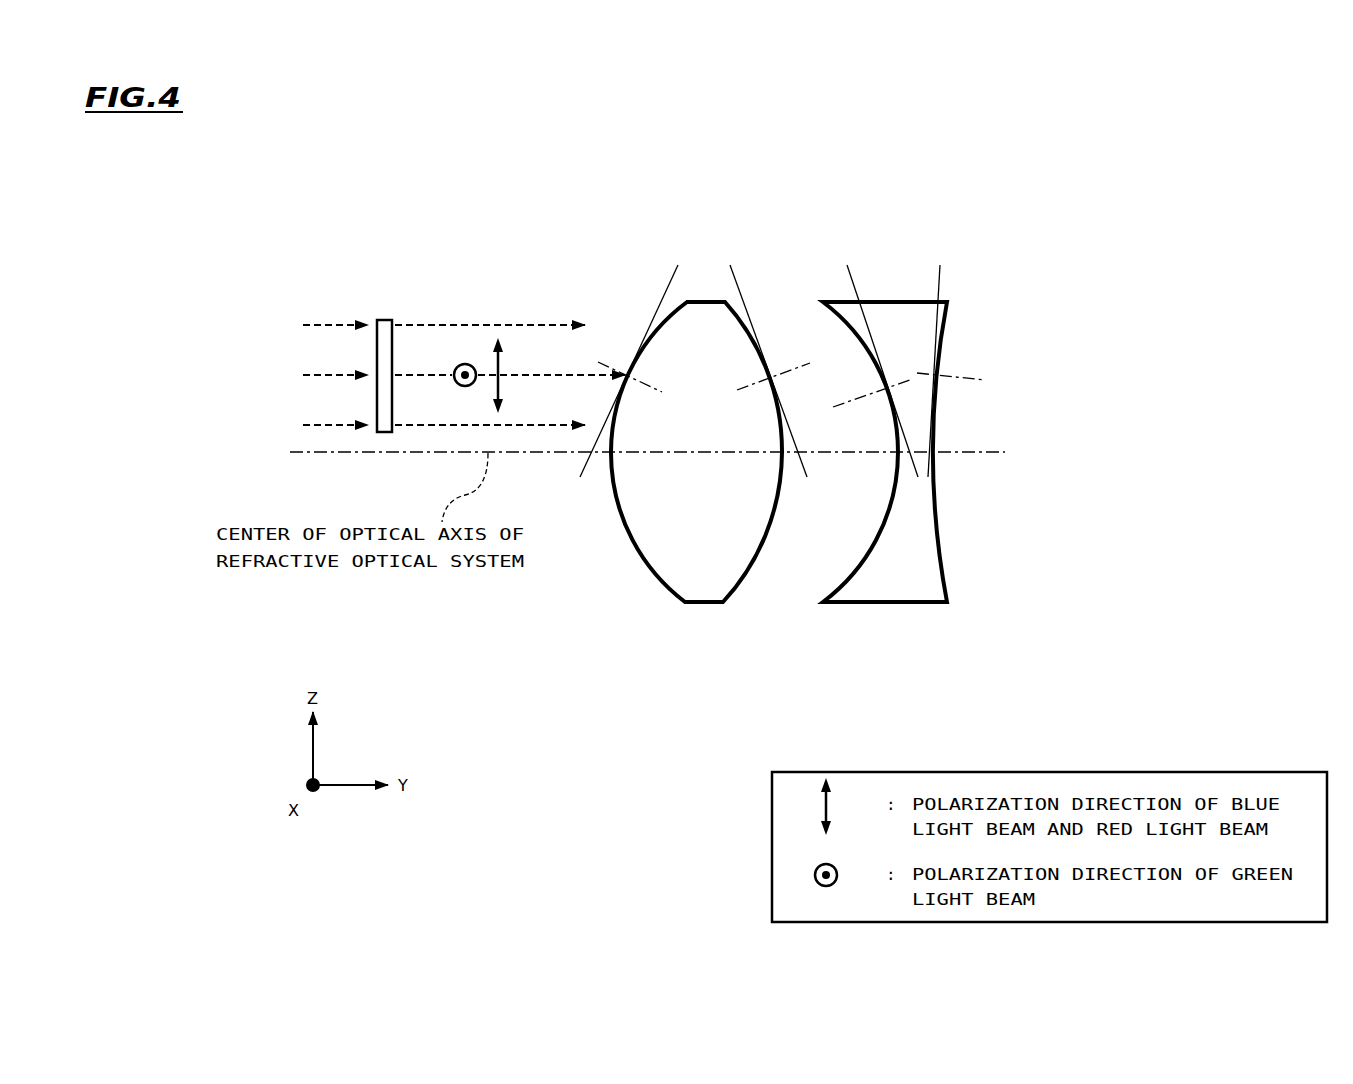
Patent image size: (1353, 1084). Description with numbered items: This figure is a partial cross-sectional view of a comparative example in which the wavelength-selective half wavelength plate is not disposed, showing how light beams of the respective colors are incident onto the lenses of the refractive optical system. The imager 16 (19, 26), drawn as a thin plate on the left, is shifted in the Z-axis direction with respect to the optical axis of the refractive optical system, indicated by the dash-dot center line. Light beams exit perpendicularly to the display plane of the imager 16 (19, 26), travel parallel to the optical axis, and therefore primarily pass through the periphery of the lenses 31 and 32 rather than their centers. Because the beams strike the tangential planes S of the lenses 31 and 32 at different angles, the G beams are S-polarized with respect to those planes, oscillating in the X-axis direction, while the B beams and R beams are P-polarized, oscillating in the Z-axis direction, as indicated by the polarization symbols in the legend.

The imager 19 is at (472, 326).
The imager 16 is at (384, 376).
The imager 26 is at (388, 308).
The lens 31 is at (700, 590).
The lens 32 is at (885, 590).